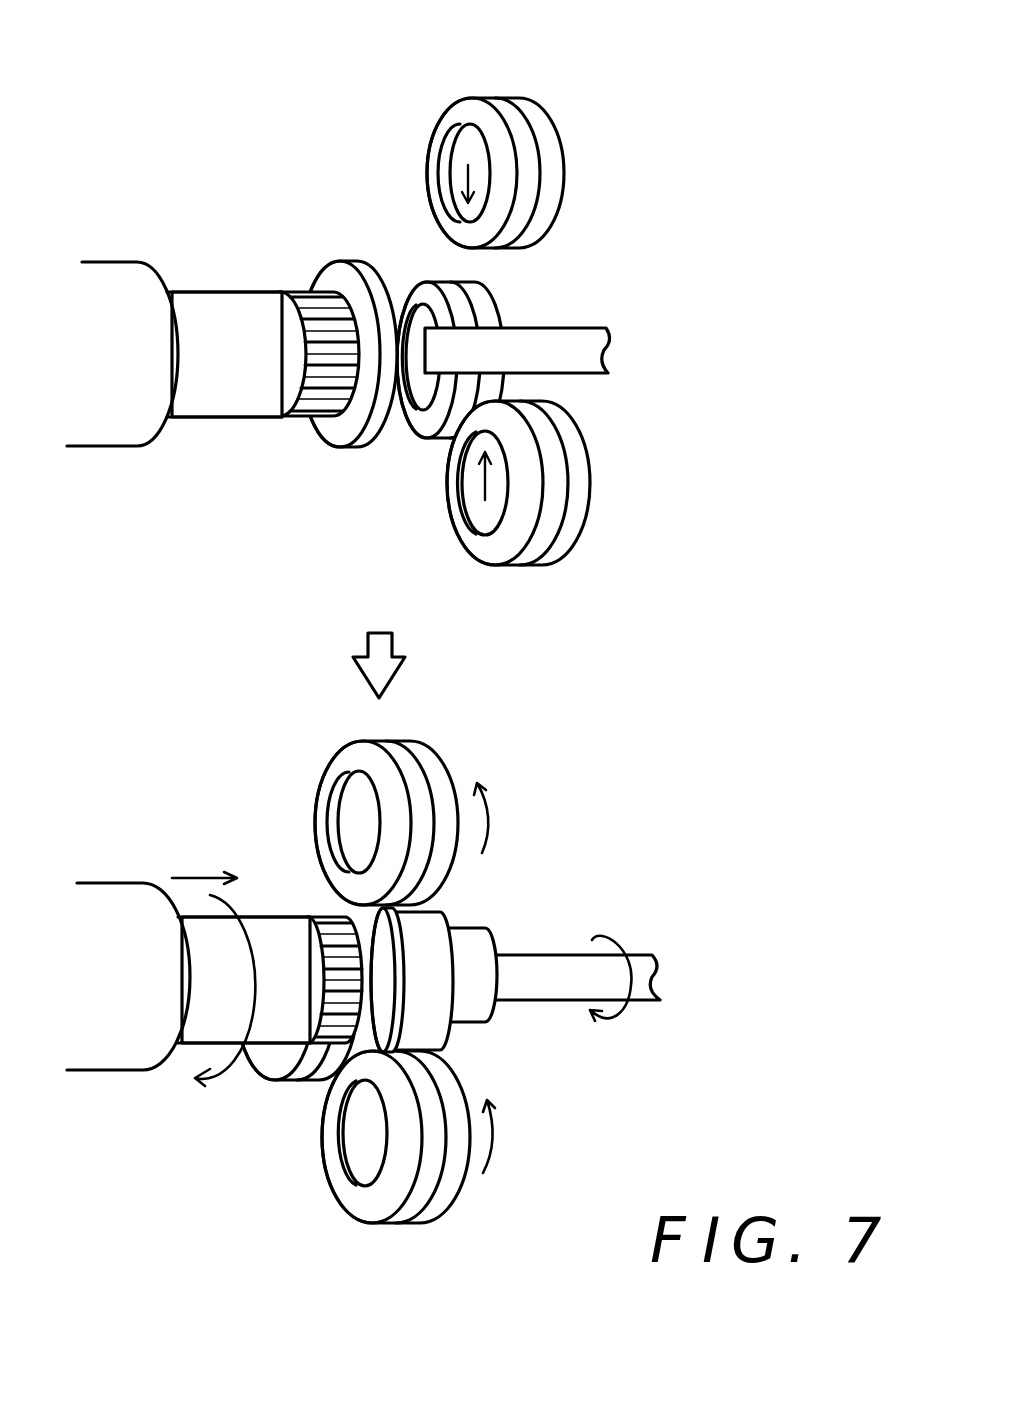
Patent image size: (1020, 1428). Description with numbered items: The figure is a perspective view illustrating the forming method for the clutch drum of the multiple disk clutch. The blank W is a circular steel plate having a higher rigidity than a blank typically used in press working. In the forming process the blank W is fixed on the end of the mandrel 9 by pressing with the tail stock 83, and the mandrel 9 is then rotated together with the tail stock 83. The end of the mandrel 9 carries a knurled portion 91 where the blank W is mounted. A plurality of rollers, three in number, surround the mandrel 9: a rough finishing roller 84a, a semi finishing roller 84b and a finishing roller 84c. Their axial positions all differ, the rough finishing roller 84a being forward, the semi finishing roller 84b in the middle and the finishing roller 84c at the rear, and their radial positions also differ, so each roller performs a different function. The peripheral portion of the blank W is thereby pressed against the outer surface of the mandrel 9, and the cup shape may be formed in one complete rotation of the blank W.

The mandrel 9 is at (198, 303).
The knurled portion of shaft 91 is at (317, 408).
The blank W is at (323, 263).
The tail stock 83 is at (590, 335).
The rough finishing roller 84a is at (578, 478).
The semi finishing roller 84b is at (463, 103).
The finishing roller 84c is at (487, 300).